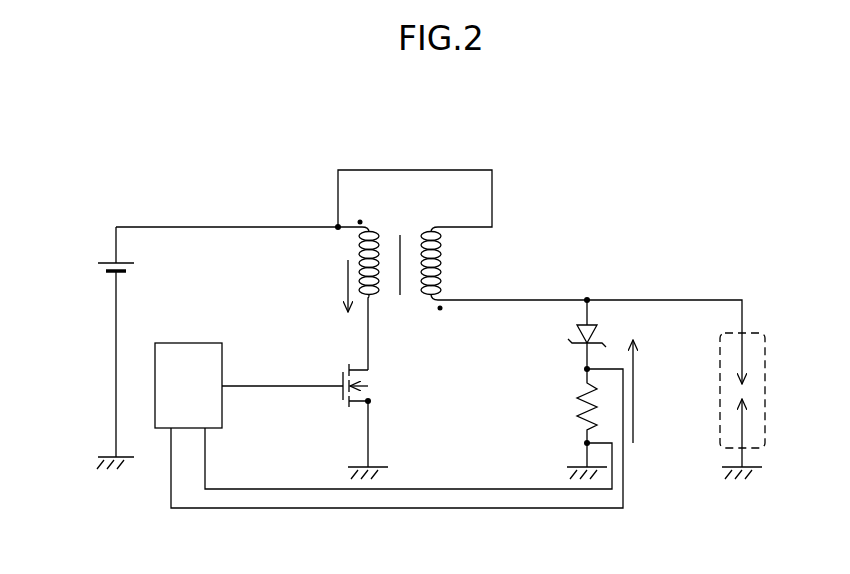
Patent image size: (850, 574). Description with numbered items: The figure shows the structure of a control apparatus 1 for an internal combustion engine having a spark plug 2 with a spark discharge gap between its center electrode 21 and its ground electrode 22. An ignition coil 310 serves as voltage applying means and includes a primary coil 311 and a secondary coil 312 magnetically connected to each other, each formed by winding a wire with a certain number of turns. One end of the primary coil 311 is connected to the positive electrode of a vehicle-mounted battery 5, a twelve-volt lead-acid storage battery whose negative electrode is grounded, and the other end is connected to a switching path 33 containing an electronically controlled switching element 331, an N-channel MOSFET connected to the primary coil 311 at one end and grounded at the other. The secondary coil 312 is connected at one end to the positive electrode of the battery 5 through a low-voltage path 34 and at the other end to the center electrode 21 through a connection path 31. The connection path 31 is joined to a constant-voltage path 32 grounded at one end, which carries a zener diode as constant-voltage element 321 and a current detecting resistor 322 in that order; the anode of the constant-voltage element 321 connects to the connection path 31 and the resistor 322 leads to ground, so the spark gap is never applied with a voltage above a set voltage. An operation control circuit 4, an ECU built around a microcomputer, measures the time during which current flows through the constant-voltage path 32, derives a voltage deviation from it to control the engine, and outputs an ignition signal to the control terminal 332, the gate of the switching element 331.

The control apparatus 1 is at (173, 167).
The spark plug 2 is at (775, 363).
The center electrode 21 is at (743, 353).
The ground electrode 22 is at (743, 423).
The operation control circuit 4 is at (147, 372).
The battery 5 is at (103, 250).
The connection path 31 is at (675, 300).
The constant-voltage path 32 is at (591, 394).
The constant-voltage element 321 is at (595, 323).
The current detecting resistor 322 is at (580, 422).
The switching path 33 is at (363, 352).
The switching element 331 is at (375, 388).
The control terminal 332 is at (339, 392).
The low-voltage path 34 is at (403, 170).
The ignition coil 310 is at (374, 214).
The primary coil 311 is at (357, 242).
The secondary coil 312 is at (448, 248).